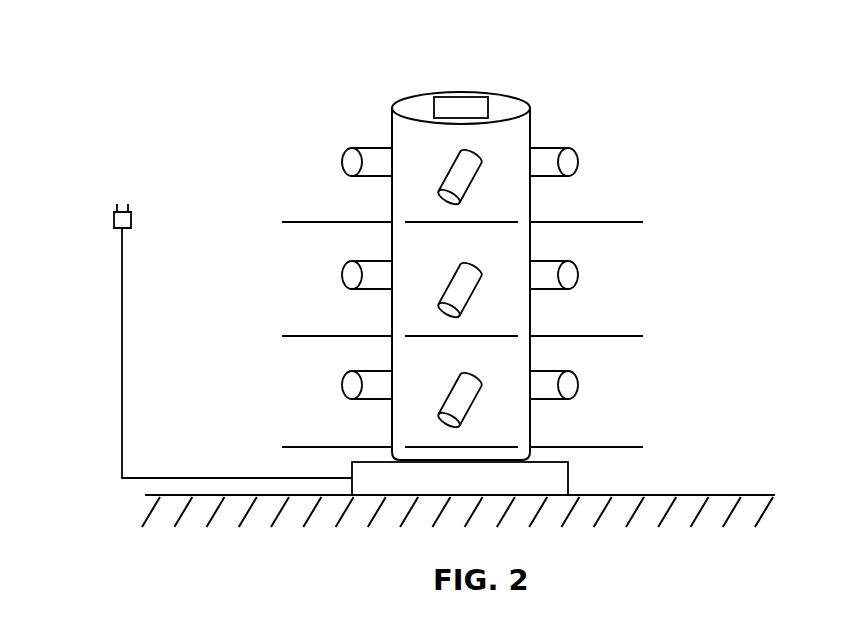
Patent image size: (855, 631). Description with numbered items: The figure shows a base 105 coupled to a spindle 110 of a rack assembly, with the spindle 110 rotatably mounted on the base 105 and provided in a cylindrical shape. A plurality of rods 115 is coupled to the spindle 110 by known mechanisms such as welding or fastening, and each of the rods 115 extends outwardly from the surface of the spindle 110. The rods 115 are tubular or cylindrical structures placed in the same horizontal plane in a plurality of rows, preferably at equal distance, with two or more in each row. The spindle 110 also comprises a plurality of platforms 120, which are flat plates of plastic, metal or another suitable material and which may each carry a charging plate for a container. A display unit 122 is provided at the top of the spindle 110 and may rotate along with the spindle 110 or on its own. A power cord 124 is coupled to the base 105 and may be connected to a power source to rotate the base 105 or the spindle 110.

The base 105 is at (370, 495).
The spindle 110 is at (503, 98).
The plurality of rods 115 is at (344, 158).
The plurality of platforms 120 is at (296, 222).
The display unit 122 is at (463, 95).
The power cord 124 is at (122, 356).